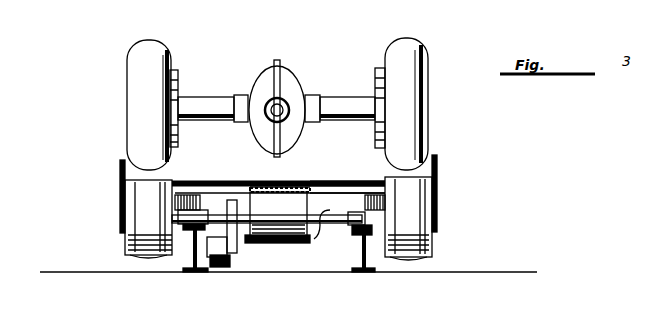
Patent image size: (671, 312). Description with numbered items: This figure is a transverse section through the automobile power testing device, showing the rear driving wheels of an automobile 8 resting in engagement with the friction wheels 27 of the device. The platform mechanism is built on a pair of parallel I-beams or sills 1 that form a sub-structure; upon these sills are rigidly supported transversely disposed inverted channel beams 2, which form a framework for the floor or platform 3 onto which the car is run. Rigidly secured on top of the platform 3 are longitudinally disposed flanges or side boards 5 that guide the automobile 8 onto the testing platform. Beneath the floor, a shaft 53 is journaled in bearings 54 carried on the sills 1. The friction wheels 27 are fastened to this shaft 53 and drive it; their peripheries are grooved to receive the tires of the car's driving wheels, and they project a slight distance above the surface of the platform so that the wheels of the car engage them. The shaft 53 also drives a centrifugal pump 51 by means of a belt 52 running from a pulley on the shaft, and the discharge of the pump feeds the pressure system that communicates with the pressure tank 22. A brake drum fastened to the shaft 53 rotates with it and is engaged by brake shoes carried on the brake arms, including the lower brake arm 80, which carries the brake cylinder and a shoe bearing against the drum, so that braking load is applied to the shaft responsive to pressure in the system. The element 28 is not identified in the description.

The I-beams or sills 1 is at (190, 255).
The inverted channel beams 2 is at (345, 193).
The floor or platform 3 is at (333, 183).
The flanges or side boards 5 is at (125, 166).
The automobile 8 is at (178, 96).
The pressure tank 22 is at (297, 182).
The friction wheels 27 is at (142, 205).
The strip 28 is at (268, 195).
The centrifugal pump 51 is at (210, 267).
The belt 52 is at (240, 243).
The shaft 53 is at (328, 229).
The bearings 54 is at (190, 210).
The lower brake arm 80 is at (296, 243).